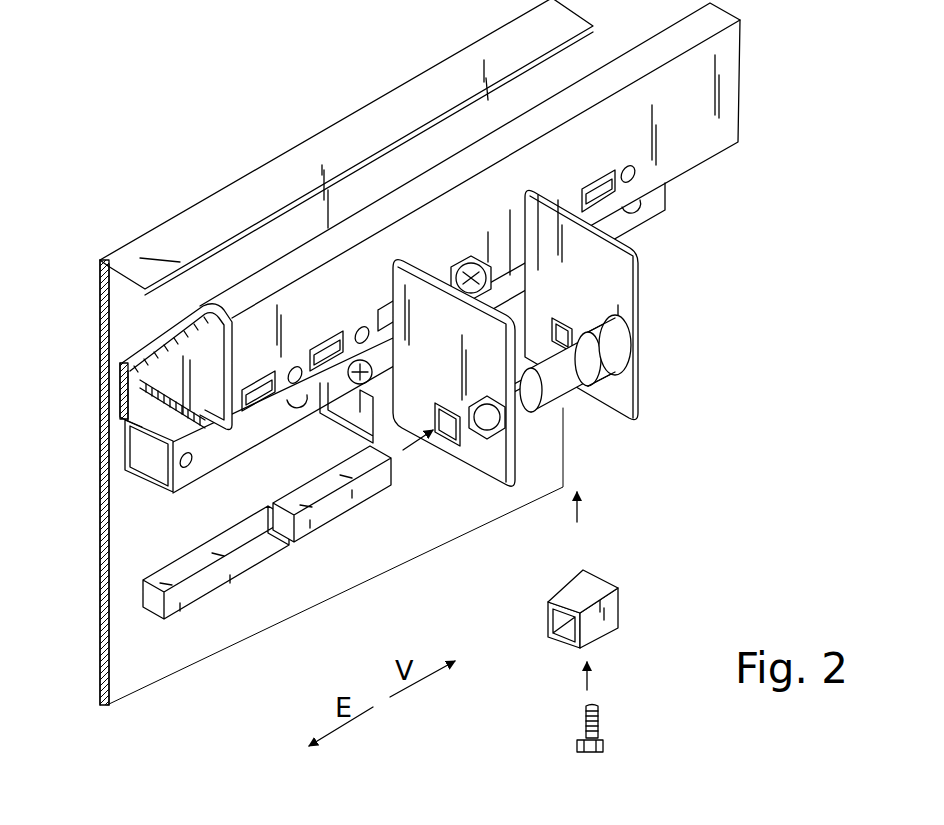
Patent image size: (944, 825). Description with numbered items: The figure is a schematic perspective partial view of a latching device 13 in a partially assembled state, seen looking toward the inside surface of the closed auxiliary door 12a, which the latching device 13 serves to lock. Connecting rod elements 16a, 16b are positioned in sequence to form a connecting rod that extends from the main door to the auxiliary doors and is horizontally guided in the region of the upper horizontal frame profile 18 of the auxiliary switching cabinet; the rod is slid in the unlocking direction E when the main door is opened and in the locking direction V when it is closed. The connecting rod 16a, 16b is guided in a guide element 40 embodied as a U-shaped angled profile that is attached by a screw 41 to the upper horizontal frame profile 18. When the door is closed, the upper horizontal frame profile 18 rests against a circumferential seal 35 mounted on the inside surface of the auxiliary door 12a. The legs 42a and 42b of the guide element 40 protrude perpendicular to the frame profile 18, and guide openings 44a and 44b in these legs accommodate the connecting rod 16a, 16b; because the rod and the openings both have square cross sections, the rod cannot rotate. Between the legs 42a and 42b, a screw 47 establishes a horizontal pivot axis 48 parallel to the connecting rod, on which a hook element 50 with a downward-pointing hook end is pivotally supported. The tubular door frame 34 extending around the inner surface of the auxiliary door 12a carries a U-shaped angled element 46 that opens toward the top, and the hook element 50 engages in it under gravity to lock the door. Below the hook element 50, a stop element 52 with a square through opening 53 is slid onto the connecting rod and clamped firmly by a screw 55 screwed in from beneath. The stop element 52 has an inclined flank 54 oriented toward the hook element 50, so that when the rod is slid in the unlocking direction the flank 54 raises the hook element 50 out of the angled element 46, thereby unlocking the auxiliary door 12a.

The auxiliary door 12a is at (150, 667).
The latching device 13 is at (270, 106).
The upper horizontal frame profile 18 is at (697, 150).
The screw 41 is at (490, 236).
The tubular door frame 34 is at (138, 443).
The circumferential seal 35 is at (130, 388).
The U-shaped angled element 46 is at (353, 410).
The connecting rod element 16a is at (335, 500).
The connecting rod element 16b is at (207, 583).
The guide element 40 is at (470, 254).
The leg 42a is at (553, 403).
The leg 42b is at (563, 247).
The guide opening 44a is at (435, 432).
The guide opening 44b is at (580, 315).
The screw 47 is at (483, 430).
The pivot axis 48 is at (643, 327).
The hook element 50 is at (553, 375).
The stop element 52 is at (601, 607).
The square through opening 53 is at (557, 637).
The inclined flank 54 is at (590, 586).
The screw 55 is at (600, 728).